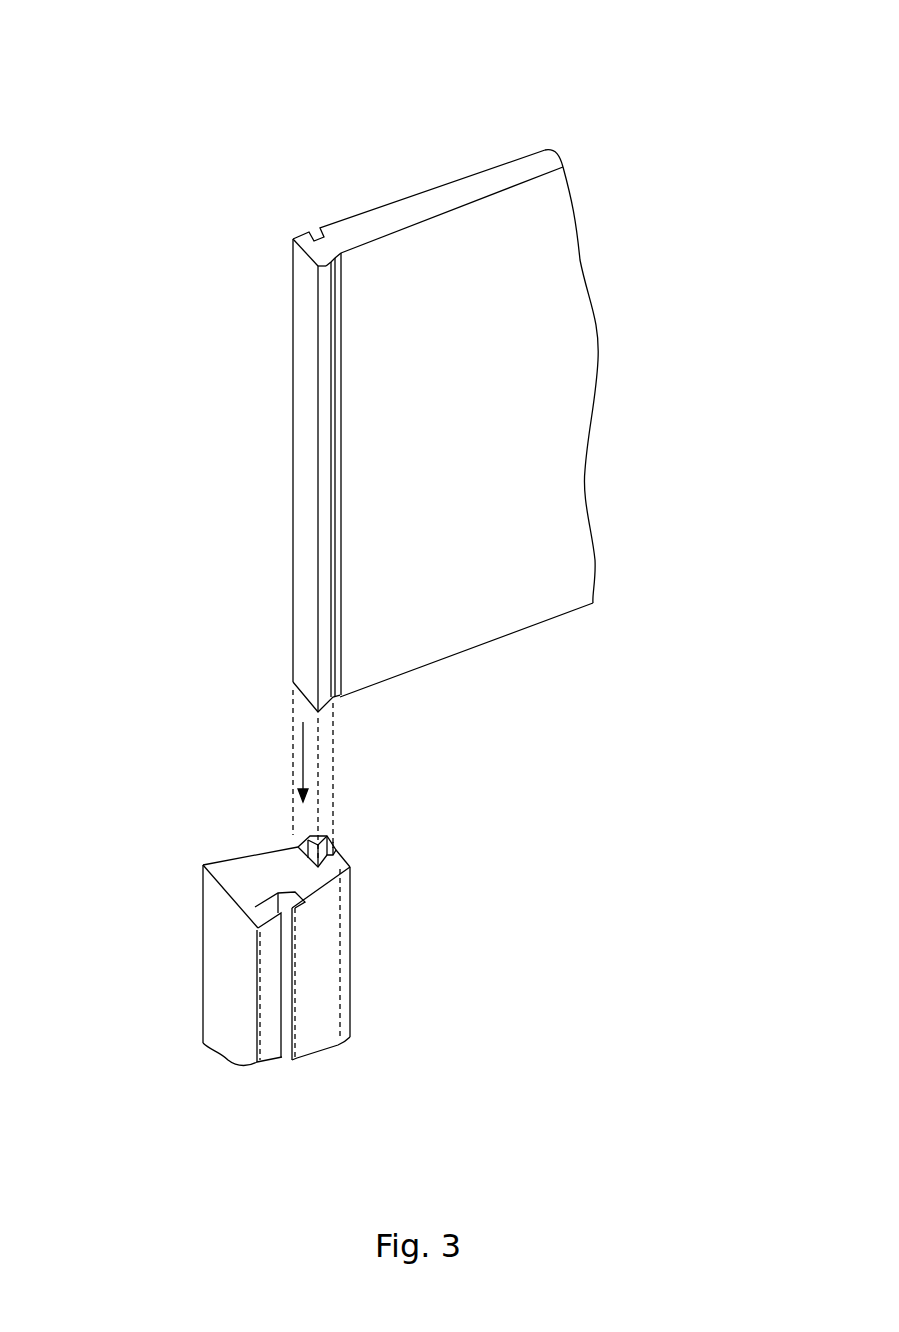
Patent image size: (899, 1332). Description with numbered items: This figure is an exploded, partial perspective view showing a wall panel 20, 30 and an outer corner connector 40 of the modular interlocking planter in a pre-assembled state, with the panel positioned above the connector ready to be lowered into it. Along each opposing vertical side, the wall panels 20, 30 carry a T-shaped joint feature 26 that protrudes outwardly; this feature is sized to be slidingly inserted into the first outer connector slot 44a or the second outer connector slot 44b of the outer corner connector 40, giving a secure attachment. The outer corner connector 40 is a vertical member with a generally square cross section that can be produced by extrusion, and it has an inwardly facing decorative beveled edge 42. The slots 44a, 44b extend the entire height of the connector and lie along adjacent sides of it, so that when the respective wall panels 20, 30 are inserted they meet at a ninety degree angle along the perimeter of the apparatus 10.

The apparatus 10 is at (106, 126).
The wall panel 20 is at (384, 216).
The wall panel 30 is at (445, 506).
The T-shaped joint feature 26 is at (313, 243).
The outer corner connector 40 is at (218, 977).
The decorative beveled edge 42 is at (352, 904).
The first outer connector slot 44a is at (297, 848).
The second outer connector slot 44b is at (258, 913).